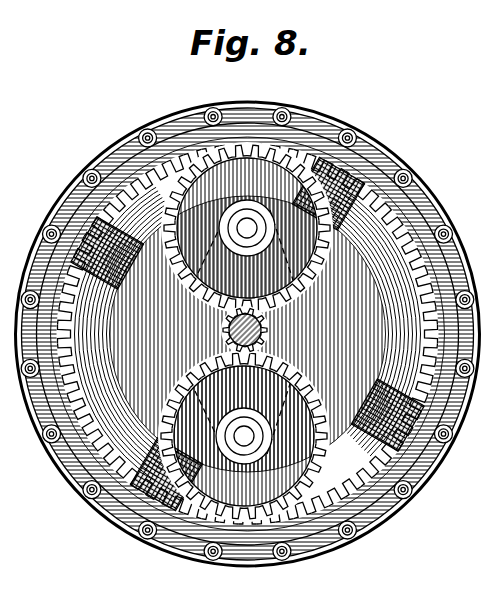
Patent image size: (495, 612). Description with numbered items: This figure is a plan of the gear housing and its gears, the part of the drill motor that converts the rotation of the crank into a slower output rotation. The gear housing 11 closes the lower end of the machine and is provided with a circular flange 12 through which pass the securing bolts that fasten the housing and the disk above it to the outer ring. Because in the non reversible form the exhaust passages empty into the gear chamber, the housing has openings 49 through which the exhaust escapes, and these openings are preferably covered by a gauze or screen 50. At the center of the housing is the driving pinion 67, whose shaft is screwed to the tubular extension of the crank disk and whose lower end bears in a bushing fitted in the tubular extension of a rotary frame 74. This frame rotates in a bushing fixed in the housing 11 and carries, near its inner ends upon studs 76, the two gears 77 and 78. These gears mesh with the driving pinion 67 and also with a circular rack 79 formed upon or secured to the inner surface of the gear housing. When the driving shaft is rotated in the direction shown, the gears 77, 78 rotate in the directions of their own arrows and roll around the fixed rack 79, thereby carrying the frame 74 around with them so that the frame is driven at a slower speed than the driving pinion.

The gear housing 11 is at (420, 214).
The circular flange 12 is at (63, 478).
The openings 49 is at (92, 255).
The gauze or screen 50 is at (78, 265).
The driving pinion 67 is at (264, 340).
The rotary frame 74 is at (193, 344).
The studs 76 is at (248, 229).
The gear 77 is at (239, 224).
The gear 78 is at (236, 432).
The circular rack 79 is at (436, 308).